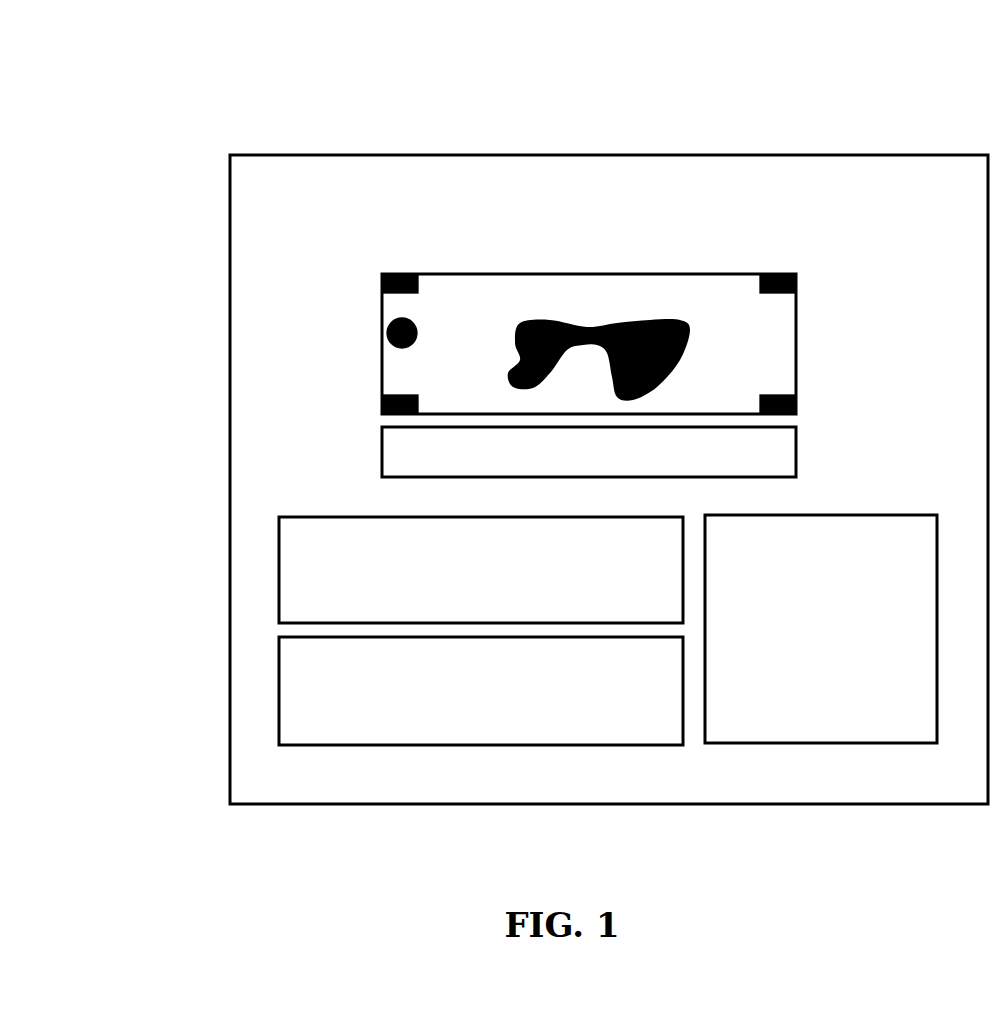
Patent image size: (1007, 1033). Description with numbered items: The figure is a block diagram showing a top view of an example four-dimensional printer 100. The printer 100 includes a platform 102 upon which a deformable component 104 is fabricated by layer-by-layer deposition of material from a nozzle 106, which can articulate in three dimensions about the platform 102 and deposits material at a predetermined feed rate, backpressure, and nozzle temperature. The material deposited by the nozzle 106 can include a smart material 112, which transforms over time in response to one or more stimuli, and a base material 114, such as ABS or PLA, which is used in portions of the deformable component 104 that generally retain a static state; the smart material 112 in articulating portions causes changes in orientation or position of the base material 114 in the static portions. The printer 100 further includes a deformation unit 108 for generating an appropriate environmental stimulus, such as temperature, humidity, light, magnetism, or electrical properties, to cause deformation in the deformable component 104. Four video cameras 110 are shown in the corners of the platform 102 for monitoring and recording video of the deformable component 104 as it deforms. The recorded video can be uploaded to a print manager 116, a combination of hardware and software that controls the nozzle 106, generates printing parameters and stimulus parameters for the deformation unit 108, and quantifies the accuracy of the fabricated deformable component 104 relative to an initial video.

The 4D printer 100 is at (425, 154).
The platform 102 is at (728, 307).
The deformable component 104 is at (614, 320).
The nozzle 106 is at (387, 333).
The deformation unit 108 is at (382, 450).
The video cameras 110 is at (783, 272).
The smart material 112 is at (481, 570).
The base material 114 is at (481, 691).
The print manager 116 is at (821, 629).